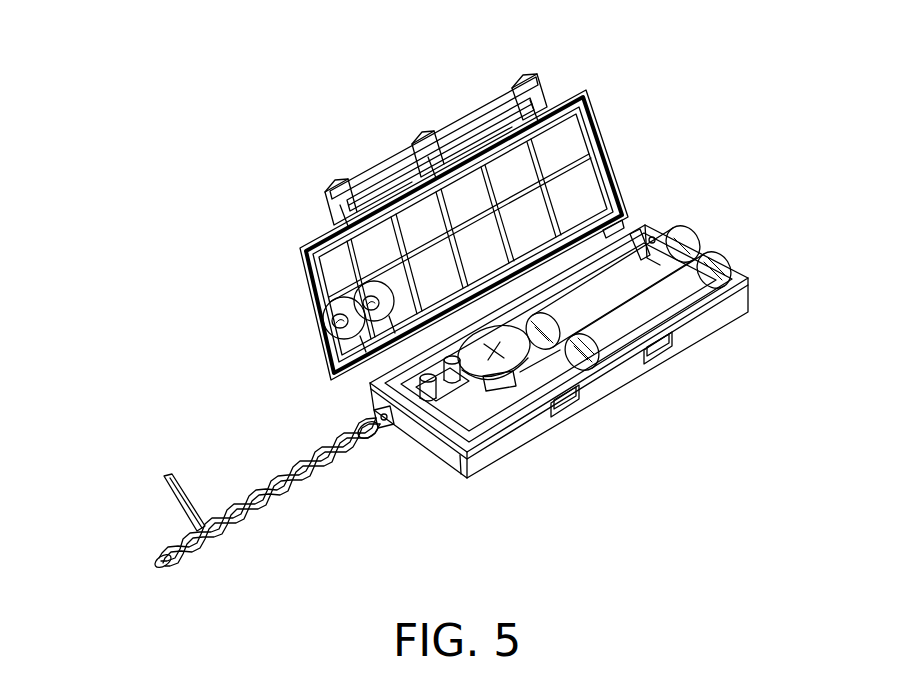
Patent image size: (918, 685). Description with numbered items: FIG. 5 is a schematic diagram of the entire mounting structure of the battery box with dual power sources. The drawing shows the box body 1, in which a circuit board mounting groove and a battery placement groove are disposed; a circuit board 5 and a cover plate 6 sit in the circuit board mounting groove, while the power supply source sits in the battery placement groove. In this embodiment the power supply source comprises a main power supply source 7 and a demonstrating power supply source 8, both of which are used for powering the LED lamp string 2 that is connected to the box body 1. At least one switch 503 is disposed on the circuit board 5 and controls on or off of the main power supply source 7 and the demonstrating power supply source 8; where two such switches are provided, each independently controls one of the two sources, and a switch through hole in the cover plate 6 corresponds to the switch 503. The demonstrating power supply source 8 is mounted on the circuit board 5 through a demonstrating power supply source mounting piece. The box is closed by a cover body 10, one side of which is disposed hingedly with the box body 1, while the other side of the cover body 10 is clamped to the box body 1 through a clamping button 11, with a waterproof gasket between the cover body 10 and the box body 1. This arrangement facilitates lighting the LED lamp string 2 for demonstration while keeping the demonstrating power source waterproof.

The box body 1 is at (648, 220).
The LED lamp string 2 is at (238, 500).
The circuit board 5 is at (575, 378).
The cover plate 6 is at (450, 397).
The main power supply source 7 is at (657, 287).
The demonstrating power supply source 8 is at (552, 398).
The cover body 10 is at (363, 173).
The clamping button 11 is at (465, 118).
The switch 503 is at (400, 421).